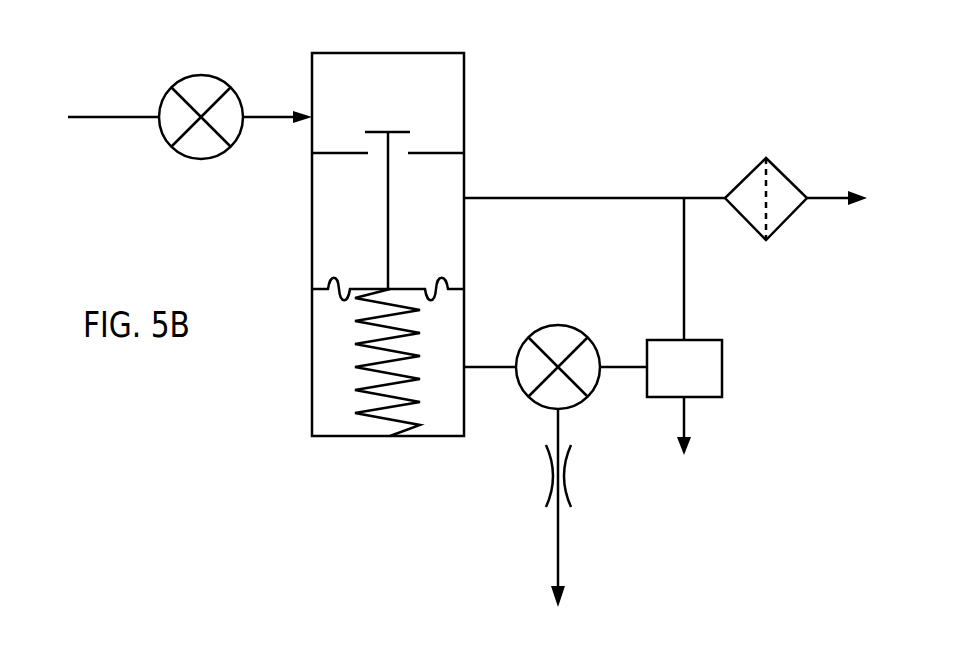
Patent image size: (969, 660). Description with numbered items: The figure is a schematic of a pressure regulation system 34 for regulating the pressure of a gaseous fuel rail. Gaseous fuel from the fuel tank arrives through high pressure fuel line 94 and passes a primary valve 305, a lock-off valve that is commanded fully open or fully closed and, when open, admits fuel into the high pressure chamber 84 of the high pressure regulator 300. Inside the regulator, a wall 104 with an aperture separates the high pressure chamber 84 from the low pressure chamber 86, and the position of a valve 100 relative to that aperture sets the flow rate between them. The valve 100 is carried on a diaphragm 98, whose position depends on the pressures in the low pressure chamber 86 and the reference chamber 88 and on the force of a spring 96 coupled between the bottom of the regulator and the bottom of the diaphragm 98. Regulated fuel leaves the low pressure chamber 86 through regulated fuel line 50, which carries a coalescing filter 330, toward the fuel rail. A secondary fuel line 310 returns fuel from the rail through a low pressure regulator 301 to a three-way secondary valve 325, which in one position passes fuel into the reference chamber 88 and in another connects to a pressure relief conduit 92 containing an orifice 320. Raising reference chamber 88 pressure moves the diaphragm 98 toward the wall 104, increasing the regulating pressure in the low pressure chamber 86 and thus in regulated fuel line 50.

The pressure regulation system 34 is at (555, 114).
The regulated fuel line 50 is at (580, 197).
The high pressure chamber 84 is at (398, 96).
The low pressure chamber 86 is at (365, 234).
The reference chamber 88 is at (345, 367).
The pressure relief conduit 92 is at (560, 552).
The high pressure fuel line 94 is at (125, 117).
The spring 96 is at (390, 423).
The diaphragm 98 is at (400, 288).
The valve 100 is at (392, 131).
The wall 104 is at (353, 153).
The high pressure regulator 300 is at (422, 53).
The low pressure regulator 301 is at (699, 378).
The primary valve 305 is at (201, 74).
The secondary fuel line 310 is at (683, 240).
The orifice 320 is at (565, 477).
The secondary valve 325 is at (558, 326).
The coalescing filter 330 is at (783, 175).